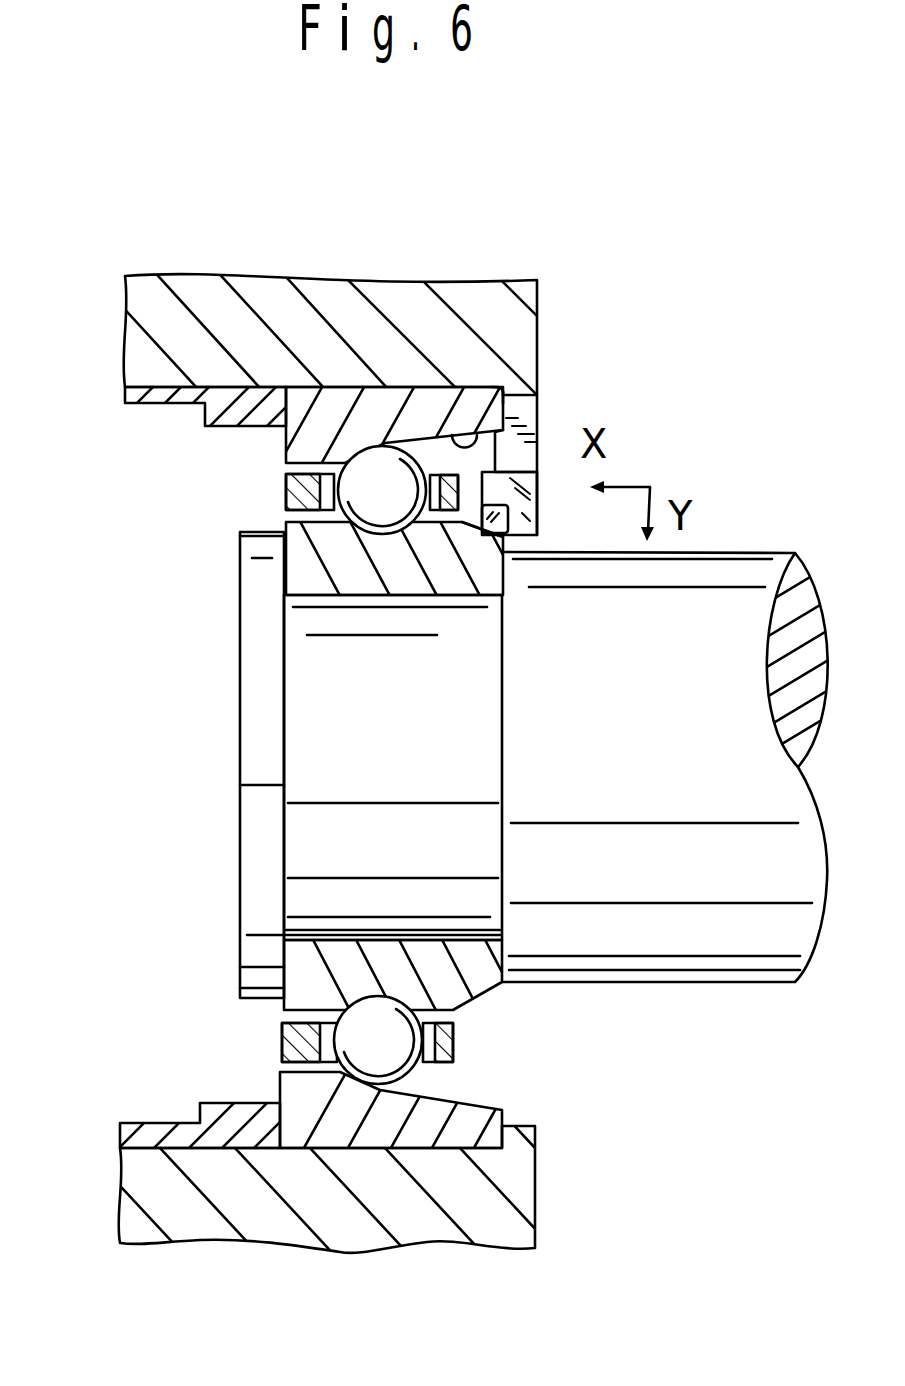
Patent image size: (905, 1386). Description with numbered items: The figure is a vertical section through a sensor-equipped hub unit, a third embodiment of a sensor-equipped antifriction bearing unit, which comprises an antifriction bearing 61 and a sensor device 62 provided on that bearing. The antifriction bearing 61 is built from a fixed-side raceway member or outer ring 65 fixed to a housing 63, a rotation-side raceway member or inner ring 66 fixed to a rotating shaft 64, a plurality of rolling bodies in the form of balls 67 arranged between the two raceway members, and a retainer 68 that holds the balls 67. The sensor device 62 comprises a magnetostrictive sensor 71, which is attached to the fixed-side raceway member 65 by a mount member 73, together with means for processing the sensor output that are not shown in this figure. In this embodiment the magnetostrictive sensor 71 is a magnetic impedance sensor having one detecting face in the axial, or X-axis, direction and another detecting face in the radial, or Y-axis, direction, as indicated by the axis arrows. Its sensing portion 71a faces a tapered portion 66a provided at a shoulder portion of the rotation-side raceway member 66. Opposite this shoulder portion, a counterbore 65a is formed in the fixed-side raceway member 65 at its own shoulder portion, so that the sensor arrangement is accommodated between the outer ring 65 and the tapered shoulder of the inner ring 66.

The antifriction bearing 61 is at (218, 491).
The sensor device 62 is at (562, 413).
The housing 63 is at (188, 300).
The rotating shaft 64 is at (308, 698).
The fixed-side raceway member 65 is at (418, 407).
The counterbore 65a is at (482, 392).
The rotation-side raceway member 66 is at (307, 572).
The tapered portion 66a is at (473, 524).
The rolling bodies 67 is at (362, 512).
The retainer 68 is at (286, 490).
The magnetostrictive sensor 71 is at (523, 500).
The sensing portion 71a is at (503, 516).
The mount member 73 is at (550, 426).